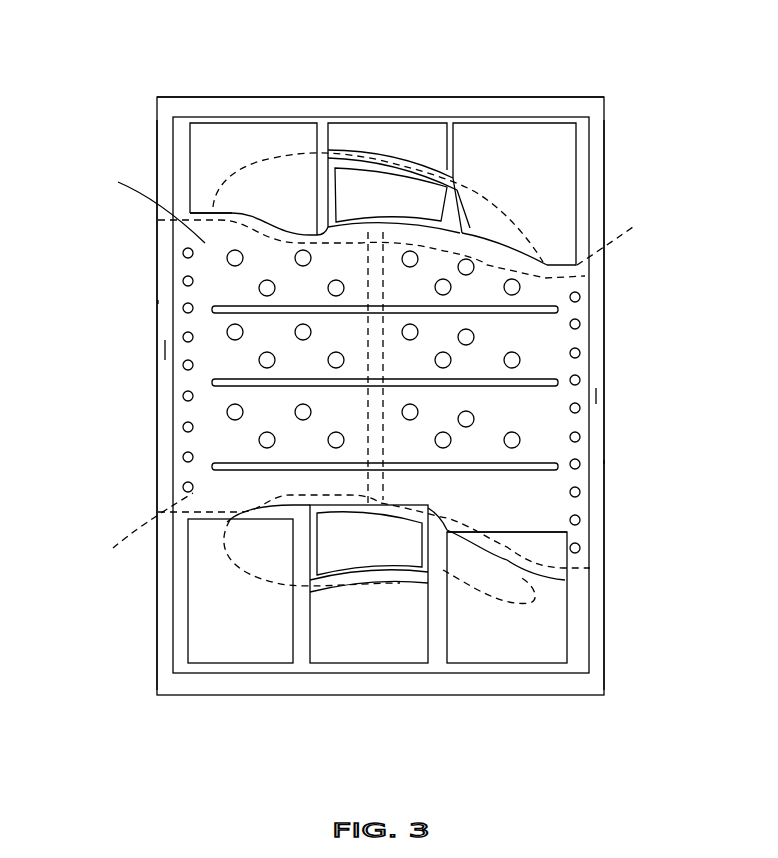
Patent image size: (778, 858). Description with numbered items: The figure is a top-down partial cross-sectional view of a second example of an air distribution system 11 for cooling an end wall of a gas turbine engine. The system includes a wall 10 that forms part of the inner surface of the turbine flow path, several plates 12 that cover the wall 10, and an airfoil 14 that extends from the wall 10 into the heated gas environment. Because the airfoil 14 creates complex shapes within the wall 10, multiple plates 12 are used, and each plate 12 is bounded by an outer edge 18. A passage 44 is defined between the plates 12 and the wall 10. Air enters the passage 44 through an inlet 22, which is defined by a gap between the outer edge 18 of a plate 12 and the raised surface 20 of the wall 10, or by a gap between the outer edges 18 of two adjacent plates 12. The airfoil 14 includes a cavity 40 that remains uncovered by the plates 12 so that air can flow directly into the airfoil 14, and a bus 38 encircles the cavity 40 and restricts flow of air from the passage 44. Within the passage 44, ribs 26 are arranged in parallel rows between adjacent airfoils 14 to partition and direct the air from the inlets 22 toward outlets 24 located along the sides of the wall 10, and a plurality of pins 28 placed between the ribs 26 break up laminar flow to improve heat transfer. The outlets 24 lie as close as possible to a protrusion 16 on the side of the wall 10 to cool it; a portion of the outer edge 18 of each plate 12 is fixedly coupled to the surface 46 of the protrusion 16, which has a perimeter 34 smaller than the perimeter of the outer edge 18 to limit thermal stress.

The wall 10 is at (592, 97).
The air distribution system 11 is at (552, 82).
The plate 12 is at (218, 138).
The airfoil 14 is at (286, 158).
The protrusion 16 is at (157, 418).
The outer edge 18 is at (205, 213).
The raised surface 20 is at (449, 104).
The inlet 22 is at (578, 193).
The outlet 24 is at (183, 280).
The rib 26 is at (497, 313).
The pin 28 is at (300, 250).
The perimeter 34 is at (157, 302).
The bus 38 is at (455, 187).
The cavity 40 is at (353, 180).
The passage 44 is at (195, 243).
The surface 46 is at (165, 350).